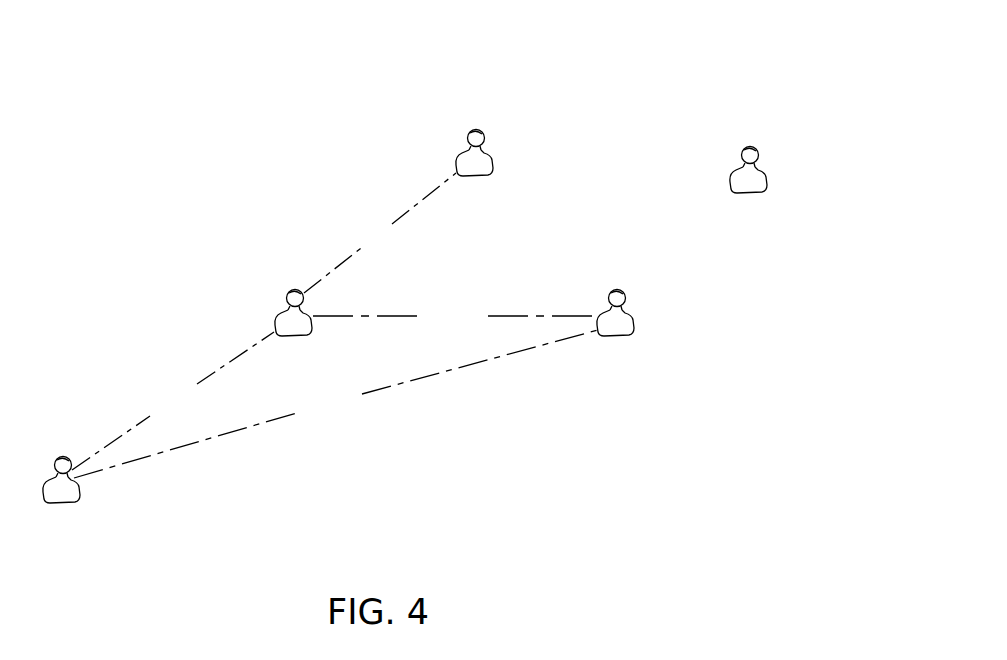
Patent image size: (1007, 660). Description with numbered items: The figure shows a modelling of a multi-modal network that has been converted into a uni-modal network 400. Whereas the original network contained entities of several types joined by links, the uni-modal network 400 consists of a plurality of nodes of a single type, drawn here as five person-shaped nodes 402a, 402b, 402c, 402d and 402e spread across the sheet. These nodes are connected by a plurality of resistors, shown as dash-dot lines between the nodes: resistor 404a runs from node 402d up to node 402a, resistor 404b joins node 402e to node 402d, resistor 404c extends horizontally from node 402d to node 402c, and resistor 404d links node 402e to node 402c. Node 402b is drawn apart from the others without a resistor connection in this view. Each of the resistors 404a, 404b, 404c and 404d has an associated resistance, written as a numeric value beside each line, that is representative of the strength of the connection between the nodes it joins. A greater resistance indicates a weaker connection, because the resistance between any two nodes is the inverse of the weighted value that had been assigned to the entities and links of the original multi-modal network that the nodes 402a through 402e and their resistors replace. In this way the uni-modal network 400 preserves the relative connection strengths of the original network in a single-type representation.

The uni-modal network 400 is at (728, 45).
The node 402a is at (485, 136).
The node 402b is at (729, 182).
The node 402c is at (636, 322).
The node 402d is at (286, 296).
The node 402e is at (68, 503).
The resistor 404a is at (397, 219).
The resistor 404b is at (207, 377).
The resistor 404c is at (355, 316).
The resistor 404d is at (403, 385).